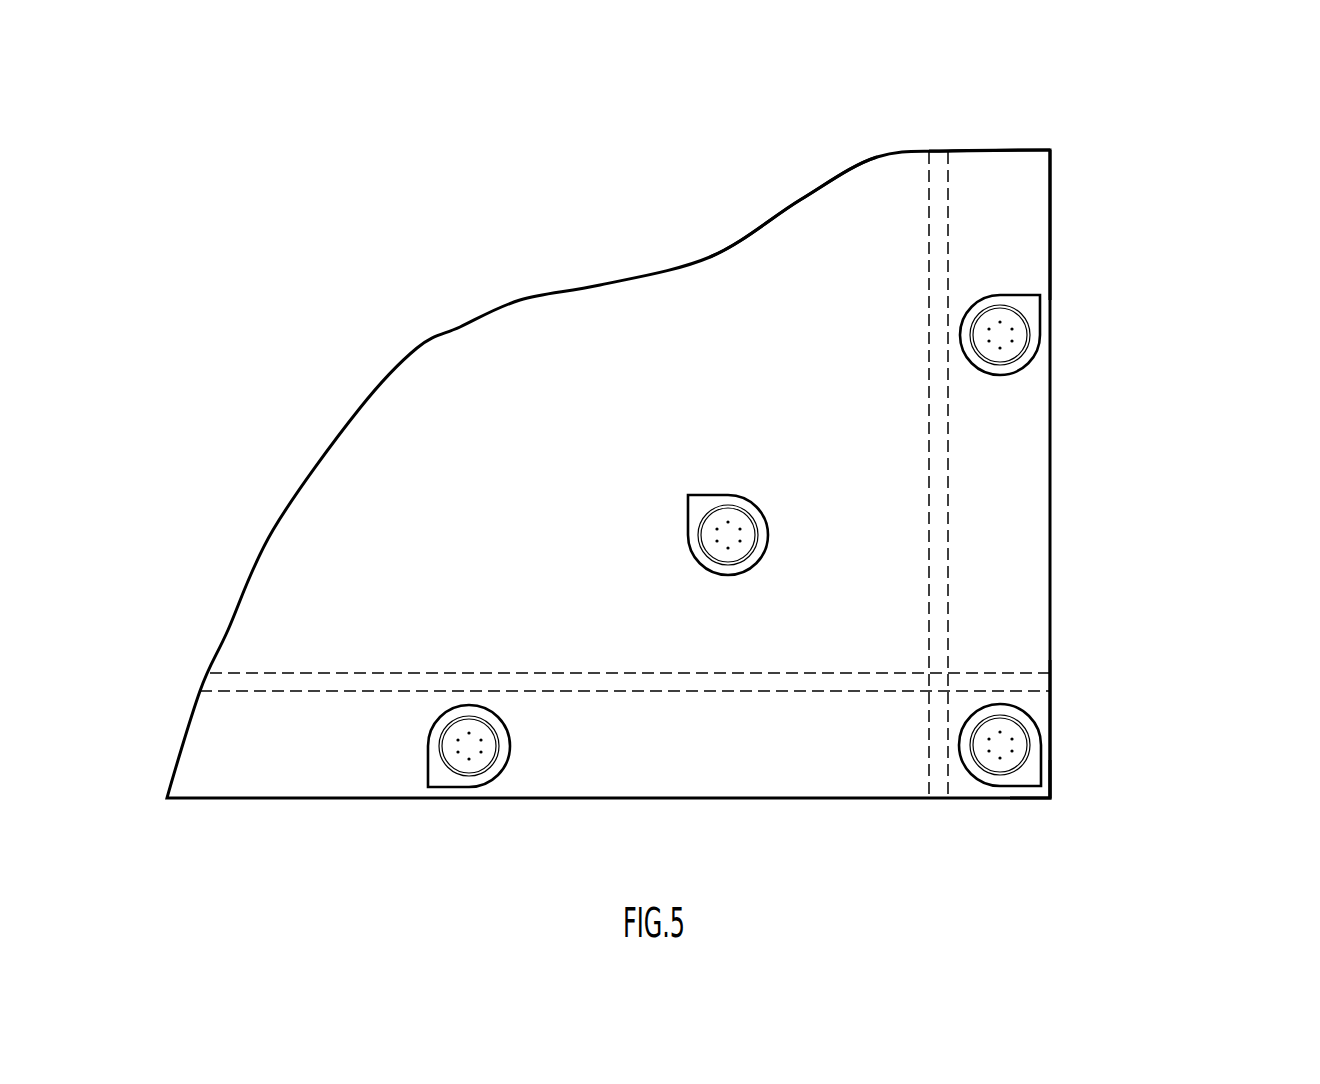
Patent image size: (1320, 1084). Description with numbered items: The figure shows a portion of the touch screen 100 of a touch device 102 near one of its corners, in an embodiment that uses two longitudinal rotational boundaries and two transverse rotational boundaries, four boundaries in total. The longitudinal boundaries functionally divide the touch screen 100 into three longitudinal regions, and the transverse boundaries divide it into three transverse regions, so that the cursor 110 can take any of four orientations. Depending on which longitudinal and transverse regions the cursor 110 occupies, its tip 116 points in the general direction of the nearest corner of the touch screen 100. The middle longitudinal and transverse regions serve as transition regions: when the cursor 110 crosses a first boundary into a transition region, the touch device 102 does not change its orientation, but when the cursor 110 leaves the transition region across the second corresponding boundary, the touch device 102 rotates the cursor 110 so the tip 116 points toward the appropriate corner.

The touch device 102 is at (1182, 208).
The touch screen 100 is at (447, 370).
The cursor 110 is at (984, 376).
The tip 116 is at (1040, 296).